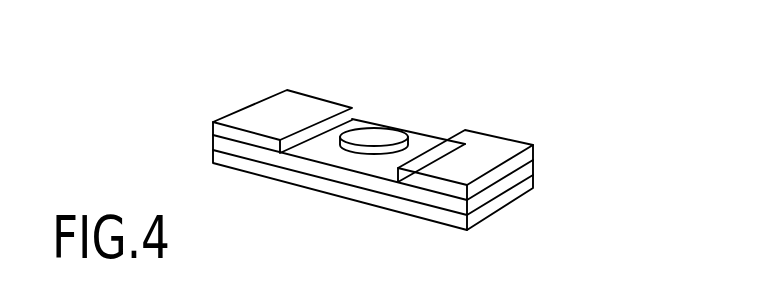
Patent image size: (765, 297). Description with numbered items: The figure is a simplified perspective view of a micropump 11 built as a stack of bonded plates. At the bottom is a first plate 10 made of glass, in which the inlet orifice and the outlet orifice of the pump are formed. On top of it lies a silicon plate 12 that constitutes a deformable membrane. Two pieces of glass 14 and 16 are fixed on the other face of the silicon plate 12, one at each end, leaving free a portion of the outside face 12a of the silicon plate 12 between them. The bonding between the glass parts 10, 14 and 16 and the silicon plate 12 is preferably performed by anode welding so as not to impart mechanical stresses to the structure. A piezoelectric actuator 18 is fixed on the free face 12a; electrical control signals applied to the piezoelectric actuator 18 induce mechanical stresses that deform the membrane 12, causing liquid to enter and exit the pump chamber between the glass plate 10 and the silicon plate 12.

The first plate 10 is at (524, 183).
The sensor assembly 11 is at (197, 161).
The silicon plate 12 is at (317, 172).
The outside face of the silicon plate 12a is at (427, 150).
The piece of glass 14 is at (507, 147).
The piece of glass 16 is at (262, 118).
The piezoelectric actuator 18 is at (378, 138).